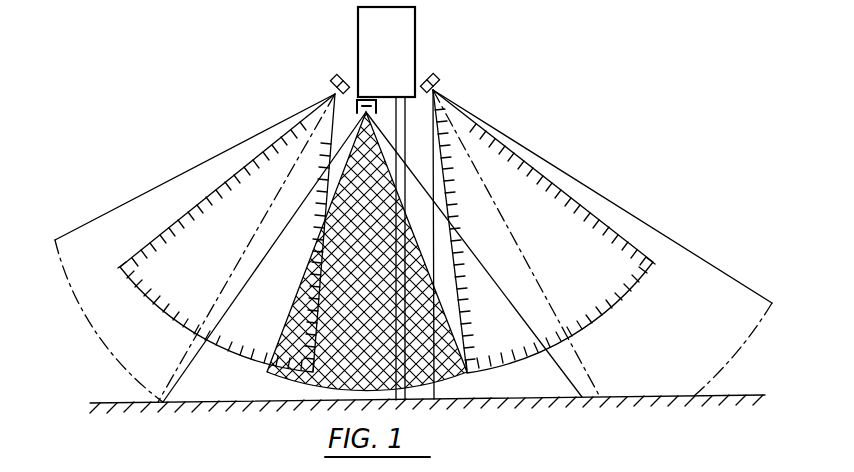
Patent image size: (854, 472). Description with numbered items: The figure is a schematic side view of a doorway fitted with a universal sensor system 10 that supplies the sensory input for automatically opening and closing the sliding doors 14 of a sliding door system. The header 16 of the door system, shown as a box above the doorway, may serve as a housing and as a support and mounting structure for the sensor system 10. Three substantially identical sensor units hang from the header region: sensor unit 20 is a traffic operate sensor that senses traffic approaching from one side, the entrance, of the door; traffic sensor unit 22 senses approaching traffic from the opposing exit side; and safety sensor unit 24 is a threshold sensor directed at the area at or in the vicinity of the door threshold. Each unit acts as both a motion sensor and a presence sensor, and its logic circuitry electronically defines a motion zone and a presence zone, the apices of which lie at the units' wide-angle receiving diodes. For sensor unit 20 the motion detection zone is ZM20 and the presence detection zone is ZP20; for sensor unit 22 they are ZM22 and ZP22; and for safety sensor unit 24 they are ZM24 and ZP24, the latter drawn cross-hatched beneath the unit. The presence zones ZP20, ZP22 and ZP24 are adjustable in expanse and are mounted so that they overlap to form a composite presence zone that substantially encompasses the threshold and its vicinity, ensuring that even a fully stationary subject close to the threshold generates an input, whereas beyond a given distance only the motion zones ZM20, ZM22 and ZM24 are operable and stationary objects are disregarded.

The sensor system 10 is at (241, 51).
The sliding doors 14 is at (402, 136).
The header 16 is at (415, 30).
The sensor unit 20 is at (328, 83).
The traffic sensor unit 22 is at (446, 80).
The safety sensor unit 24 is at (353, 97).
The motion detection zone ZM20 is at (158, 195).
The presence detection zone ZP20 is at (185, 328).
The motion detection zone ZM22 is at (690, 257).
The presence detection zone ZP22 is at (610, 305).
The motion detection zone ZM24 is at (553, 375).
The presence detection zone ZP24 is at (270, 380).